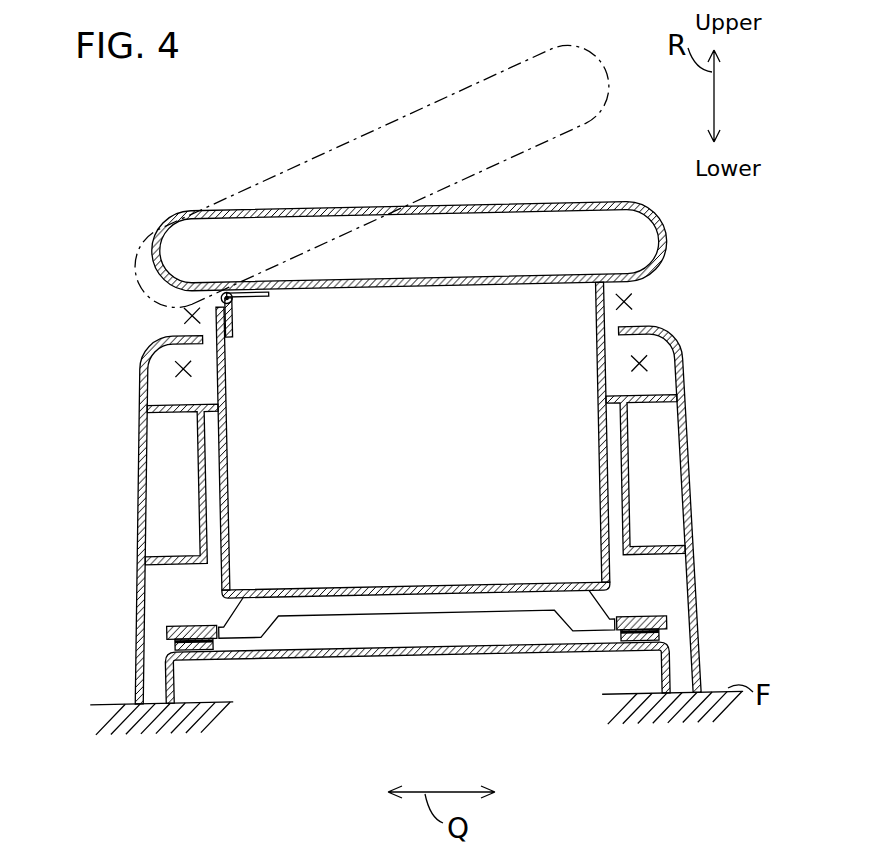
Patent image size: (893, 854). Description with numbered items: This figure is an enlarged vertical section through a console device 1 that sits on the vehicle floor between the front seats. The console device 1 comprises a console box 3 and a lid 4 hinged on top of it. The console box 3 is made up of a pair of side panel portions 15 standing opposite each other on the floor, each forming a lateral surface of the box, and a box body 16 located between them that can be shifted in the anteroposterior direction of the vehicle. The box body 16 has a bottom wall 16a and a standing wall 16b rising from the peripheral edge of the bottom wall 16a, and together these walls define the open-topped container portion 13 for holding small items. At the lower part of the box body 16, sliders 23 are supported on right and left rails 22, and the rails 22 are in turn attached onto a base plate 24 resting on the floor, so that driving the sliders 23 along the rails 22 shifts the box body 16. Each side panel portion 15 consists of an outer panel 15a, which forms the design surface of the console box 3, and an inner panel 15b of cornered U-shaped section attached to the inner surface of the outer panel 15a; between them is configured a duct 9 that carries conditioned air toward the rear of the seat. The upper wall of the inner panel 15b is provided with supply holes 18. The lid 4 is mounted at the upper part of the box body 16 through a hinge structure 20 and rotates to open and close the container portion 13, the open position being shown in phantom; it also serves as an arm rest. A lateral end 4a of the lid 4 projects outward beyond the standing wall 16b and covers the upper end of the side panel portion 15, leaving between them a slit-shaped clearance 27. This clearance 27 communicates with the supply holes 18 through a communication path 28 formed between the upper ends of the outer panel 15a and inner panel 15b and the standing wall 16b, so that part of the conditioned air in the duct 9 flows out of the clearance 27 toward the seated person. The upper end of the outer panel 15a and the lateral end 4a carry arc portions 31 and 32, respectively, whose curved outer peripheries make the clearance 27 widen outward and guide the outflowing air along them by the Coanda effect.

The console device 1 is at (628, 128).
The console box 3 is at (413, 498).
The lid 4 is at (442, 100).
The lateral end 4a is at (664, 222).
The duct 9 is at (194, 572).
The container portion 13 is at (468, 556).
The side panel portion 15 is at (413, 498).
The outer panel 15a is at (137, 494).
The inner panel 15b is at (178, 560).
The box body 16 is at (414, 501).
The bottom wall 16a is at (347, 586).
The standing wall 16b is at (227, 449).
The supply hole 18 is at (181, 399).
The hinge structure 20 is at (236, 316).
The rail 22 is at (186, 647).
The slider 23 is at (168, 626).
The base plate 24 is at (296, 656).
The clearance 27 is at (188, 311).
The communication path 28 is at (180, 360).
The arc portion 31 is at (157, 334).
The arc portion 32 is at (153, 280).